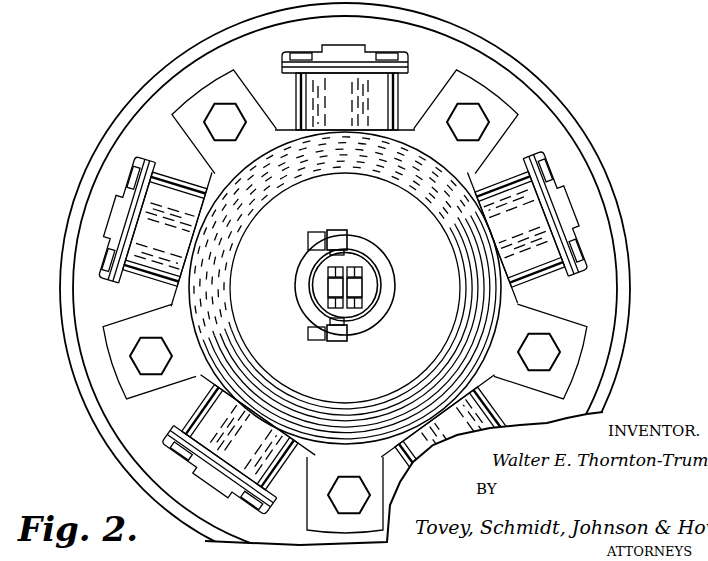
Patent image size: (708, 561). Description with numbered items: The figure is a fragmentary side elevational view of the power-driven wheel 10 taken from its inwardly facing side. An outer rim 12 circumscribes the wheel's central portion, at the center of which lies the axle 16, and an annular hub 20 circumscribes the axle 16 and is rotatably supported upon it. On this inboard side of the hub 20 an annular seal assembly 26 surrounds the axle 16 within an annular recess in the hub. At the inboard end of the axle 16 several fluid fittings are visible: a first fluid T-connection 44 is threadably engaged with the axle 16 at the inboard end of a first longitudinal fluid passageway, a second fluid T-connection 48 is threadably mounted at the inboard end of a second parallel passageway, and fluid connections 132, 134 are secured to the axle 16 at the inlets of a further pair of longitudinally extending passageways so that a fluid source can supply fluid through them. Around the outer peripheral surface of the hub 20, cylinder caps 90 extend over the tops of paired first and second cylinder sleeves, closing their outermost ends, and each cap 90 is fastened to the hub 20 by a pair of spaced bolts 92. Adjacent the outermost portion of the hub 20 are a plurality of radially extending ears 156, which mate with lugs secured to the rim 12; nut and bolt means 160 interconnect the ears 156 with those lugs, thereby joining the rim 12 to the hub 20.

The power-driven wheel 10 is at (598, 132).
The rim 12 is at (628, 305).
The axle 16 is at (368, 287).
The annular hub 20 is at (495, 298).
The annular seal assembly 26 is at (372, 250).
The first fluid T-connection 44 is at (363, 303).
The second fluid T-connection 48 is at (330, 285).
The cylinder cap 90 is at (356, 67).
The bolts 92 is at (298, 100).
The fluid connection 132 is at (337, 230).
The fluid connection 134 is at (341, 344).
The ears 156 is at (232, 84).
The nut and bolt means 160 is at (226, 140).